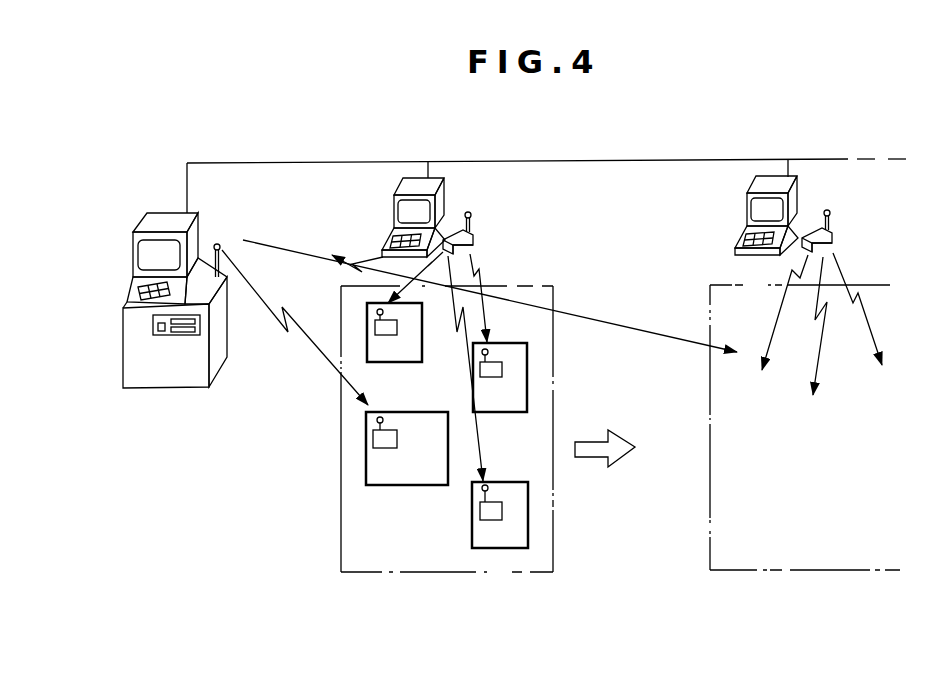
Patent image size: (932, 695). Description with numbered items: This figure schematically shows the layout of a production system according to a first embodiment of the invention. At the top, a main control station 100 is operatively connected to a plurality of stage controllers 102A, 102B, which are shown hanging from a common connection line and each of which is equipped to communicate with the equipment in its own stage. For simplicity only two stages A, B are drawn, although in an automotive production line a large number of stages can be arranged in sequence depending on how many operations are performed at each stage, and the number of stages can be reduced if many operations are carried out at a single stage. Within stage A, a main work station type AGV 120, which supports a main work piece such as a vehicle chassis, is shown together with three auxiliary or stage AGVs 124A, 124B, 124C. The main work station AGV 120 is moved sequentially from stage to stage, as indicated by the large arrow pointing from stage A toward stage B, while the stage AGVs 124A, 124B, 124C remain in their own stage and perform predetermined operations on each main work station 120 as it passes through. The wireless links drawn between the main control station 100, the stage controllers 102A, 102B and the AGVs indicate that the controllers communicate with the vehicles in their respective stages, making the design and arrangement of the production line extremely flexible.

The main control station 100 is at (141, 212).
The stage controller 102A is at (388, 159).
The stage controller 102B is at (757, 158).
The main work station type AGV 120 is at (397, 477).
The auxiliary or stage AGV 124A is at (472, 535).
The auxiliary or stage AGV 124B is at (407, 358).
The auxiliary or stage AGV 124C is at (507, 402).
The stage A is at (478, 574).
The stage B is at (808, 572).